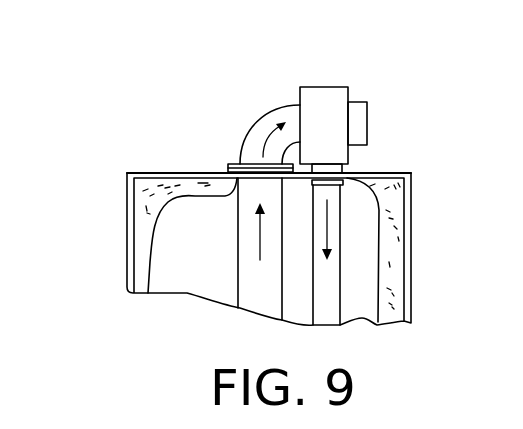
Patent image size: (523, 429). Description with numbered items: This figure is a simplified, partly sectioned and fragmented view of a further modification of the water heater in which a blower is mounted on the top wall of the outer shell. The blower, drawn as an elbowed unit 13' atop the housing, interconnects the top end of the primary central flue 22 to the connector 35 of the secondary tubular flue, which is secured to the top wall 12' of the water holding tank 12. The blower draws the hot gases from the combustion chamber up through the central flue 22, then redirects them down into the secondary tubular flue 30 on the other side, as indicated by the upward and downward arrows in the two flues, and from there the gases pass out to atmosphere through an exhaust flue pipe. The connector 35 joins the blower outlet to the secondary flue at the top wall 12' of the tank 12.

The water holding tank 12 is at (224, 249).
The top wall of the water holding tank 12' is at (252, 226).
The blower unit 13' is at (310, 103).
The primary central flue 22 is at (238, 247).
The return duct 30 is at (340, 268).
The connector 35 is at (346, 172).